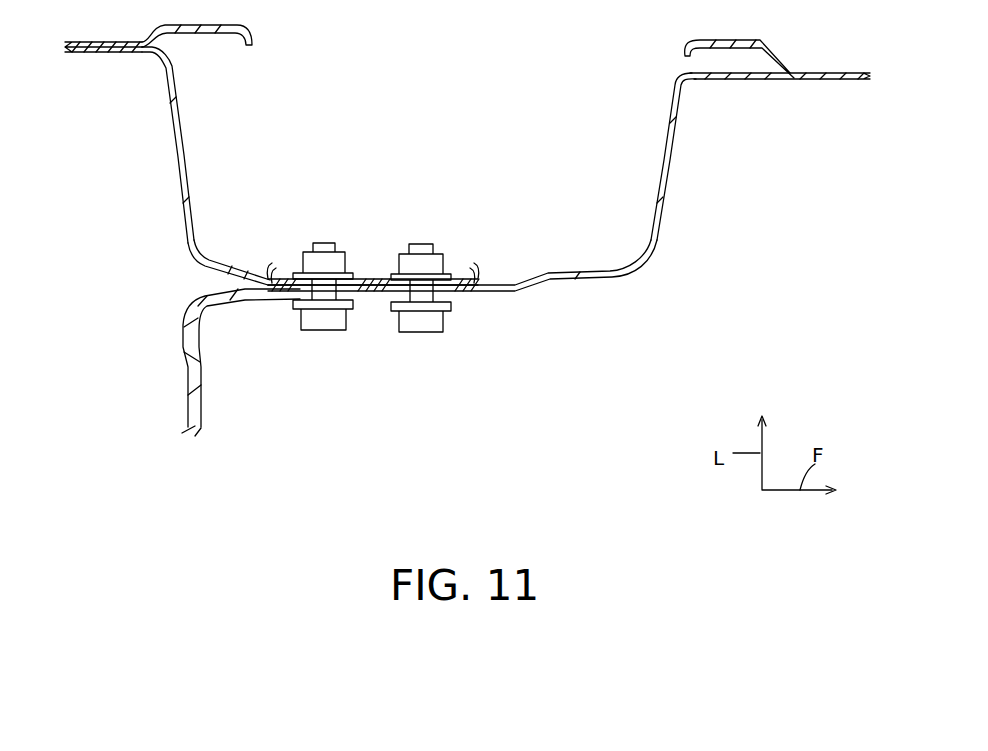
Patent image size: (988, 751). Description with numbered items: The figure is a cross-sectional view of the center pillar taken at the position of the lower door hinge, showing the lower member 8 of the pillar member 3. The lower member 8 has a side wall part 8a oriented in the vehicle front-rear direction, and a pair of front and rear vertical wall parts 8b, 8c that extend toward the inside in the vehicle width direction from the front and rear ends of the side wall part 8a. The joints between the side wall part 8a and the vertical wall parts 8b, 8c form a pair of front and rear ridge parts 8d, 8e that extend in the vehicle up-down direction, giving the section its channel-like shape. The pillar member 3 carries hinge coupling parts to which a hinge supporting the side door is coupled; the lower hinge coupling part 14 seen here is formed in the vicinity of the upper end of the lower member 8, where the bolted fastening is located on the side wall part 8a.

The lower member 8 is at (399, 194).
The pillar member 3 is at (419, 194).
The side wall part 8a is at (503, 287).
The front vertical wall part 8b is at (663, 173).
The rear vertical wall part 8c is at (183, 158).
The front ridge part 8d is at (622, 277).
The rear ridge part 8e is at (201, 266).
The lower hinge coupling part 14 is at (373, 238).